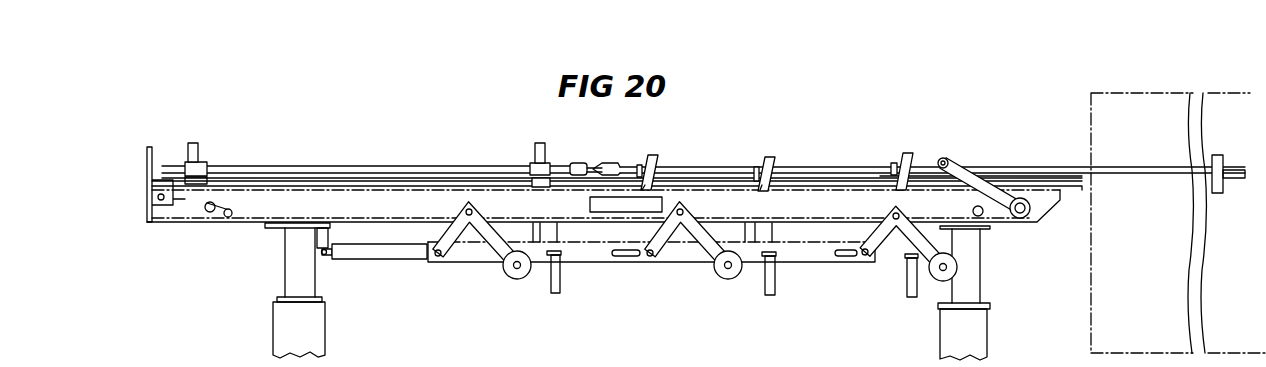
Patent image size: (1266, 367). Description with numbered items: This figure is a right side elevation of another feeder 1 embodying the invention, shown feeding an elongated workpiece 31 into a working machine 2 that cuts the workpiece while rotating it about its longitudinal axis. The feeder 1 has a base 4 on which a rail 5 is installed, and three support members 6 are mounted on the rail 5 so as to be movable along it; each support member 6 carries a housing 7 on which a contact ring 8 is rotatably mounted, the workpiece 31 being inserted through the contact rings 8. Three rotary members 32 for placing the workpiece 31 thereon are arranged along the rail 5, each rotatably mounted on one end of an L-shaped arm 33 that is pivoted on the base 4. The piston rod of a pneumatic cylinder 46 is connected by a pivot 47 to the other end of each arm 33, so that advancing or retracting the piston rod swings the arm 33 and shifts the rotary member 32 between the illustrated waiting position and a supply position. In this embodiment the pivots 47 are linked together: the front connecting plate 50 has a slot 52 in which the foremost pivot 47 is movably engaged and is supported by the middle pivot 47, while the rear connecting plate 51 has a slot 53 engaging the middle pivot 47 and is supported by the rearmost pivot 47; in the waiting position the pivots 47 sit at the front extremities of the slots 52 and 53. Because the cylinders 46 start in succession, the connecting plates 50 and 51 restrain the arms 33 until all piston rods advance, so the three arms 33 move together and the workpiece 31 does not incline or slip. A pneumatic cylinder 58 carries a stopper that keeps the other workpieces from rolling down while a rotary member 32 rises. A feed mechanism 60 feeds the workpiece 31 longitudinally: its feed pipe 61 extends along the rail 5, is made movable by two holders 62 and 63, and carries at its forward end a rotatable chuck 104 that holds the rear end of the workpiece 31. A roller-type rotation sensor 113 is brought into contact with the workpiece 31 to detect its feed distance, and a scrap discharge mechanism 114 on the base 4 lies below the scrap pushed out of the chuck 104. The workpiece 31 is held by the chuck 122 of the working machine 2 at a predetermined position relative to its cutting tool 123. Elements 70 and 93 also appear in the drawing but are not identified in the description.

The feeder 1 is at (1036, 160).
The working machine 2 is at (1128, 98).
The base 4 is at (806, 207).
The rail 5 is at (833, 187).
The support members 6 is at (653, 186).
The housing 7 is at (650, 158).
The contact ring 8 is at (645, 172).
The elongated workpiece 31 is at (862, 170).
The rotary member 32 is at (514, 270).
The L-shaped arm 33 is at (480, 210).
The pneumatic cylinder 46 is at (378, 253).
The pivot 47 is at (438, 258).
The connecting plate 50 is at (805, 256).
The connecting plate 51 is at (584, 255).
The slot 52 is at (845, 258).
The slot 53 is at (626, 258).
The pneumatic cylinder 58 is at (554, 290).
The feed mechanism 60 is at (428, 160).
The feed pipe 61 is at (386, 165).
The holder 62 is at (197, 185).
The holder 63 is at (535, 182).
The slide block 70 is at (193, 145).
The coupling block 93 is at (540, 150).
The chuck 104 is at (612, 160).
The rotation sensor 113 is at (945, 158).
The scrap discharge mechanism 114 is at (662, 200).
The chuck 122 is at (1220, 193).
The cutting tool 123 is at (1236, 165).